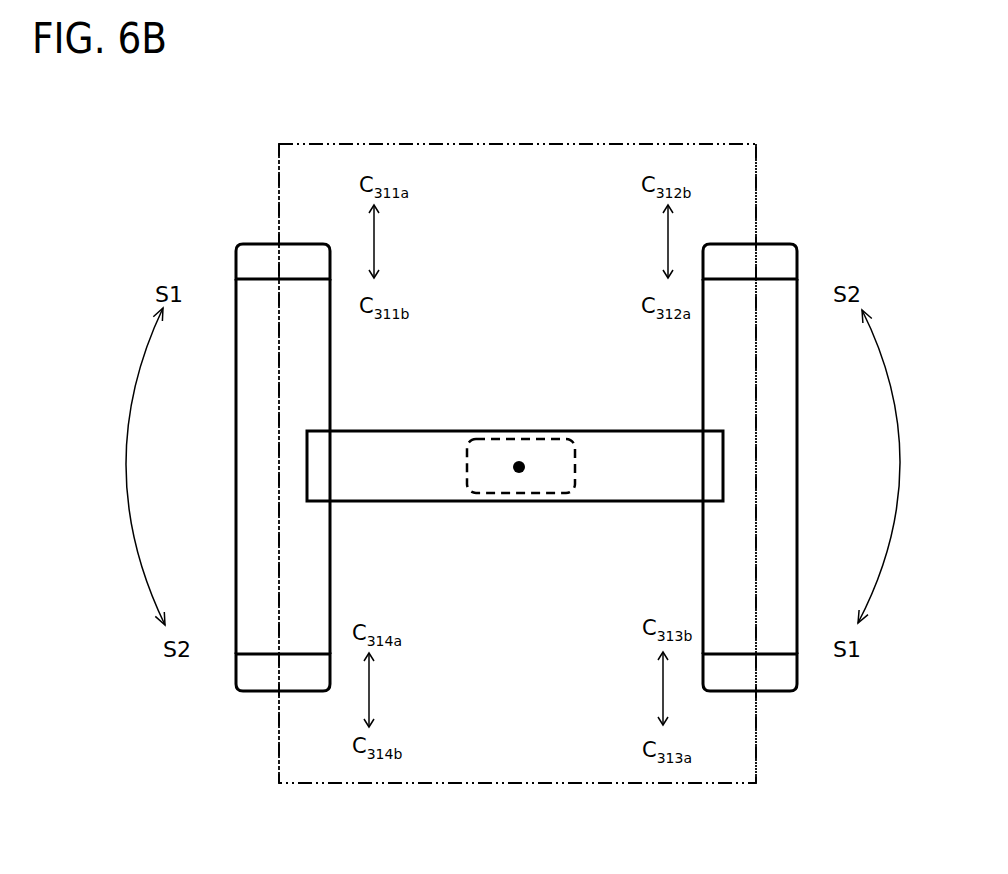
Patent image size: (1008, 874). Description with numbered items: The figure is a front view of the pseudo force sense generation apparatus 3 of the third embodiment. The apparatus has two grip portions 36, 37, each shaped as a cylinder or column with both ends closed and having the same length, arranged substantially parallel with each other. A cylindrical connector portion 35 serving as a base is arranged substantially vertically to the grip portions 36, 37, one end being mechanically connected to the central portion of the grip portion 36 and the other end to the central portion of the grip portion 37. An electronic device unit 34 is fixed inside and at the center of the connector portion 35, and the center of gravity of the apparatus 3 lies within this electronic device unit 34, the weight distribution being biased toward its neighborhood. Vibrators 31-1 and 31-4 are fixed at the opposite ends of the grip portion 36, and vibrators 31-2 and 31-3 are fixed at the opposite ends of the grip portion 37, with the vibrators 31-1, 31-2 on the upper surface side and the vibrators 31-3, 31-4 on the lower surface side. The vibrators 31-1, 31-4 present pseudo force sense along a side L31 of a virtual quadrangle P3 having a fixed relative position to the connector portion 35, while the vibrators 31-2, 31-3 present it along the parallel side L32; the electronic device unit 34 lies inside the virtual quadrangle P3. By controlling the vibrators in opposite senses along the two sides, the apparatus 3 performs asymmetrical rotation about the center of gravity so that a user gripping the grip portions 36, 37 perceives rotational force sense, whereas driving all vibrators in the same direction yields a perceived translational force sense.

The pseudo force sense generation apparatus 3 is at (824, 85).
The vibrator 31-1 is at (250, 255).
The vibrator 31-2 is at (783, 262).
The vibrator 31-3 is at (787, 680).
The vibrator 31-4 is at (243, 678).
The electronic device unit 34 is at (510, 445).
The connector portion 35 is at (373, 460).
The grip portion 36 is at (308, 537).
The grip portion 37 is at (733, 411).
The virtual quadrangle P3 is at (517, 463).
The side of the virtual quadrangle L31 is at (254, 463).
The side of the virtual quadrangle L32 is at (780, 463).